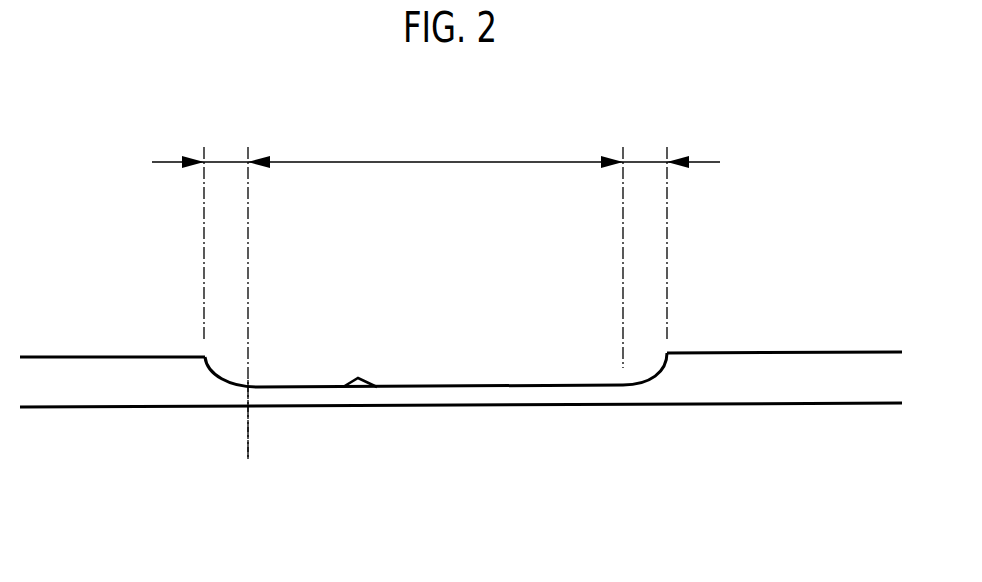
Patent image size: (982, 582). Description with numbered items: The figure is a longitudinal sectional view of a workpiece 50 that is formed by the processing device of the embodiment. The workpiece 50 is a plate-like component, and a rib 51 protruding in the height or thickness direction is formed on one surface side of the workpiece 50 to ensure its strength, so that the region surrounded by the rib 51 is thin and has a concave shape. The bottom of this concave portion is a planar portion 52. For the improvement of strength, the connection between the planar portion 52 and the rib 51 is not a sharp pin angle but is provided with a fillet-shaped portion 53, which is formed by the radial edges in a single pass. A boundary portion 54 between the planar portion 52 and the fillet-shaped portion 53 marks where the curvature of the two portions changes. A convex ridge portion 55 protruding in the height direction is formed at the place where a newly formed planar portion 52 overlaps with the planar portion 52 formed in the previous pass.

The workpiece 50 is at (801, 330).
The rib 51 is at (90, 356).
The planar portion 52 is at (440, 161).
The fillet-shaped portion 53 is at (222, 162).
The boundary portion 54 is at (249, 440).
The convex ridge portion 55 is at (358, 378).